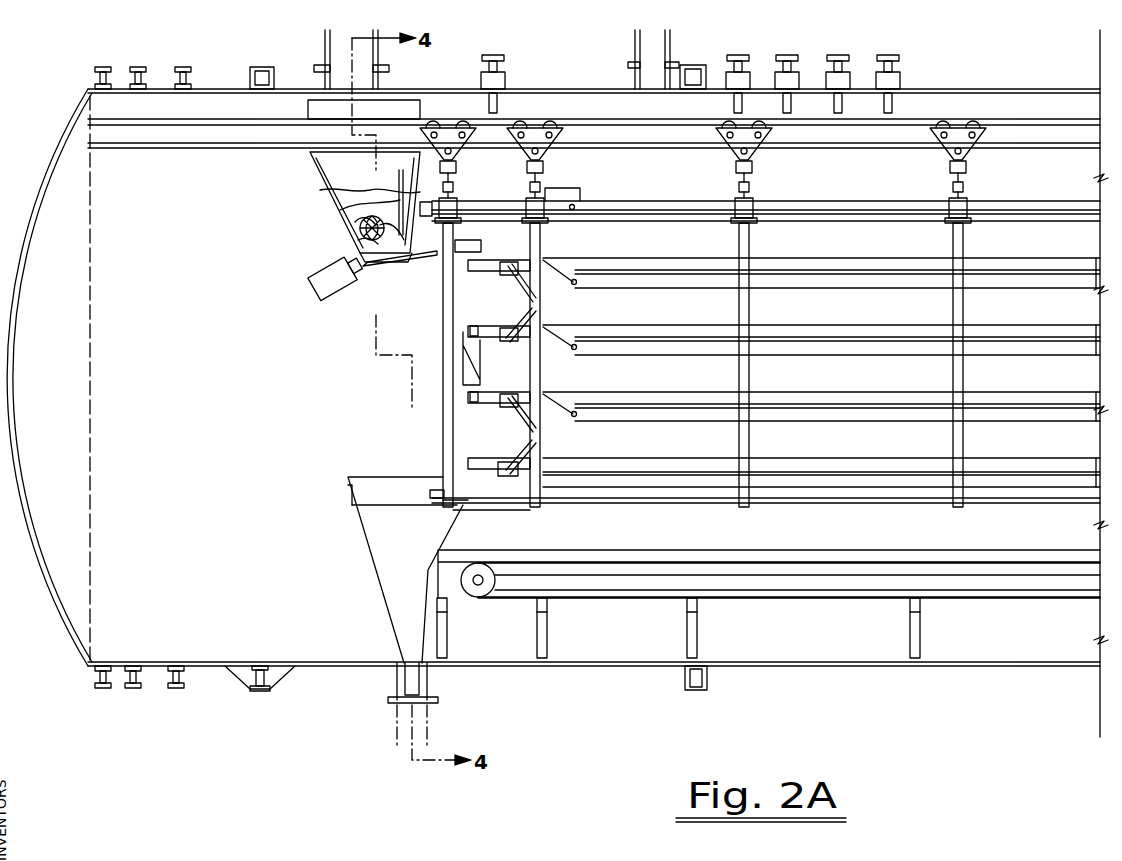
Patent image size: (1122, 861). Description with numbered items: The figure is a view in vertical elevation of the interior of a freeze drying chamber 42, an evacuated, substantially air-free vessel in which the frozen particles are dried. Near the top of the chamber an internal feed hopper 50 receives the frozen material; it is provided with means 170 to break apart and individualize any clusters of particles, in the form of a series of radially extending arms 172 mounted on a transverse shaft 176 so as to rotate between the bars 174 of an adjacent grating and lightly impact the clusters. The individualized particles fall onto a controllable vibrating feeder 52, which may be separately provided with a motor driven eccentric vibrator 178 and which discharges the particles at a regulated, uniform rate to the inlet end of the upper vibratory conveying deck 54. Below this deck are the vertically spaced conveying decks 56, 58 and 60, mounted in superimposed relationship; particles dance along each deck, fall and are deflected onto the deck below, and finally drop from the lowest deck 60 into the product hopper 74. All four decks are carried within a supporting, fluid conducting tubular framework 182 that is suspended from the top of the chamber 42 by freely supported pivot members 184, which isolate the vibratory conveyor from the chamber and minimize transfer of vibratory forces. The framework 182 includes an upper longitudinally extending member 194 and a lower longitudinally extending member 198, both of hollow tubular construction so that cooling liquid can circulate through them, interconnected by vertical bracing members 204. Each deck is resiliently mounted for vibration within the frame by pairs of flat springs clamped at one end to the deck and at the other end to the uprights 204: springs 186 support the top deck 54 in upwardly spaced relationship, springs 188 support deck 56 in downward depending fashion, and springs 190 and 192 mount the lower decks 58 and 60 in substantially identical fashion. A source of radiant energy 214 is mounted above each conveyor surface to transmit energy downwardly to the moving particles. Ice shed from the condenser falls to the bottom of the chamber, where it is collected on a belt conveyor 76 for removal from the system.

The freeze drying chamber 42 is at (538, 88).
The internal feed hopper 50 is at (322, 178).
The vibrating feeder 52 is at (470, 246).
The conveying deck 54 is at (860, 256).
The conveying deck 56 is at (860, 322).
The conveying deck 58 is at (860, 388).
The conveying deck 60 is at (852, 453).
The product hopper 74 is at (370, 543).
The belt conveyor 76 is at (654, 560).
The cluster breaking means 170 is at (350, 214).
The radially extending arms 172 is at (358, 240).
The grating bars 174 is at (399, 180).
The transverse shaft 176 is at (403, 238).
The motor driven eccentric vibrator 178 is at (342, 290).
The tubular framework 182 is at (580, 510).
The pivot members 184 is at (753, 187).
The flat springs 186 is at (506, 282).
The flat springs 188 is at (516, 320).
The flat springs 190 is at (512, 405).
The flat springs 192 is at (512, 452).
The upper longitudinally extending member 194 is at (652, 206).
The lower longitudinally extending member 198 is at (845, 500).
The vertical bracing members 204 is at (752, 242).
The radiant energy source 214 is at (1084, 226).